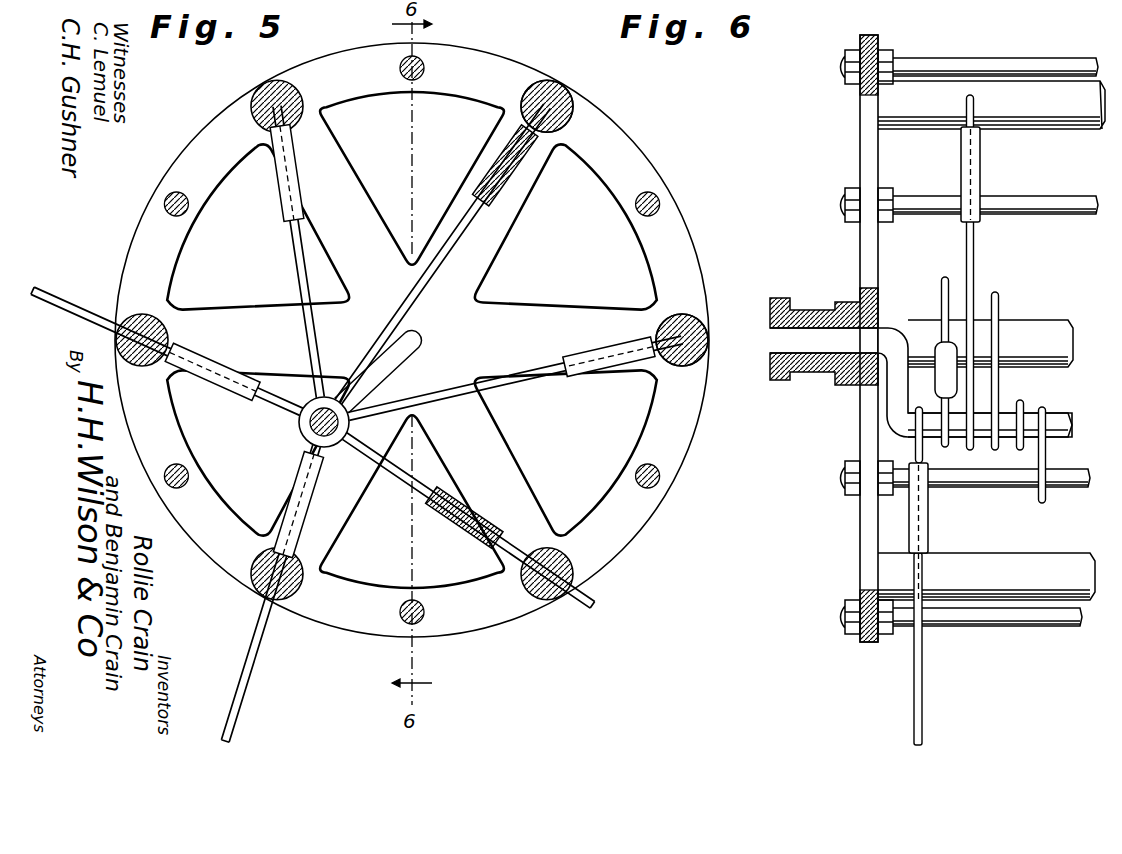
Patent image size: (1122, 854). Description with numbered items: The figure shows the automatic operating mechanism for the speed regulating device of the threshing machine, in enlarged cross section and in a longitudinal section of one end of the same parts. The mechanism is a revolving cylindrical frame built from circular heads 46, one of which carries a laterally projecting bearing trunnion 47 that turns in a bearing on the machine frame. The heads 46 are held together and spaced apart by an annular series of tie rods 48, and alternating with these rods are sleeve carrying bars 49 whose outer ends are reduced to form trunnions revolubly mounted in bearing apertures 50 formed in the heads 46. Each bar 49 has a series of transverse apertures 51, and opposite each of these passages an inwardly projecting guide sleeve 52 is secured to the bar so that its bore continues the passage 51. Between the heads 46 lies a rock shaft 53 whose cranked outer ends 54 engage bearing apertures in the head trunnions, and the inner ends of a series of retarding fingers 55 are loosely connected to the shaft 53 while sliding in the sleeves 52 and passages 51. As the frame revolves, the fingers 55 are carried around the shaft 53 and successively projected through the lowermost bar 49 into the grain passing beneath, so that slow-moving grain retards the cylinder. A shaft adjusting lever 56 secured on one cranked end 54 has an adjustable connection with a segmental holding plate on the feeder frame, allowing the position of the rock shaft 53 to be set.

In FIG. 5, the circular heads 46 is at (645, 172).
In FIG. 6, the circular heads 46 is at (878, 42).
In FIG. 6, the bearing trunnion 47 is at (806, 310).
In FIG. 5, the tie rods 48 is at (424, 610).
In FIG. 6, the tie rods 48 is at (1036, 622).
In FIG. 5, the sleeve carrying bars 49 is at (566, 566).
In FIG. 6, the sleeve carrying bars 49 is at (1000, 567).
In FIG. 6, the bearing apertures 50 is at (870, 117).
In FIG. 5, the transverse apertures 51 is at (566, 88).
In FIG. 5, the guide sleeve 52 is at (478, 520).
In FIG. 6, the guide sleeve 52 is at (930, 512).
In FIG. 5, the rock shaft 53 is at (304, 400).
In FIG. 6, the rock shaft 53 is at (1050, 418).
In FIG. 5, the cranked outer ends 54 is at (422, 354).
In FIG. 6, the cranked outer ends 54 is at (840, 344).
In FIG. 5, the retarding fingers 55 is at (252, 680).
In FIG. 6, the retarding fingers 55 is at (922, 700).
In FIG. 6, the shaft adjusting lever 56 is at (780, 382).